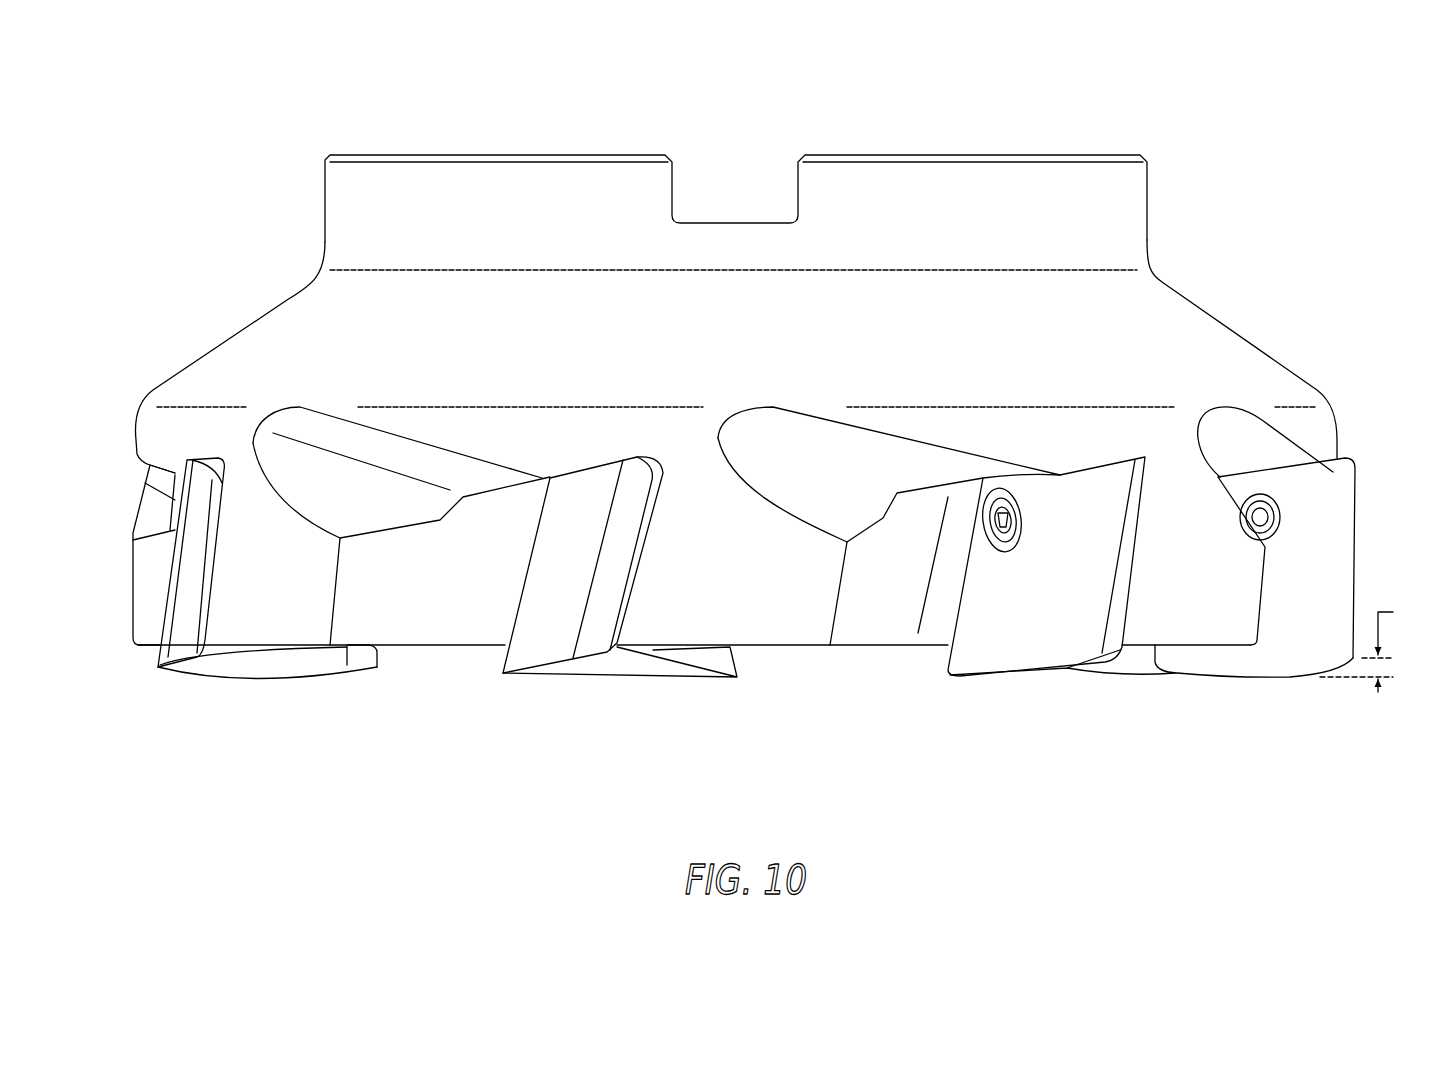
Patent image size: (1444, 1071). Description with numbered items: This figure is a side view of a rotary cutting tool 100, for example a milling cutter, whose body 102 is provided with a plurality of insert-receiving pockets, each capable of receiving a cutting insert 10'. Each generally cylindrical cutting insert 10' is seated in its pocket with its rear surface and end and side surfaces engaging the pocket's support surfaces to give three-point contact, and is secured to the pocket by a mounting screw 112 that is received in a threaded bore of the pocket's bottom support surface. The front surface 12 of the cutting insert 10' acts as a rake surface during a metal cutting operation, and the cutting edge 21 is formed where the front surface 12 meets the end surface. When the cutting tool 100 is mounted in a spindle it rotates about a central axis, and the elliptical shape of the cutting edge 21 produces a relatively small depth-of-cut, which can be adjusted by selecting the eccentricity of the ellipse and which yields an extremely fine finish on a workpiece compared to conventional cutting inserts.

The rotary cutting tool 100 is at (1262, 122).
The body 102 is at (1147, 238).
The cutting insert 10' is at (752, 620).
The front surface 12 is at (546, 585).
The first cutting edge 21 is at (497, 675).
The mounting screw 112 is at (987, 528).